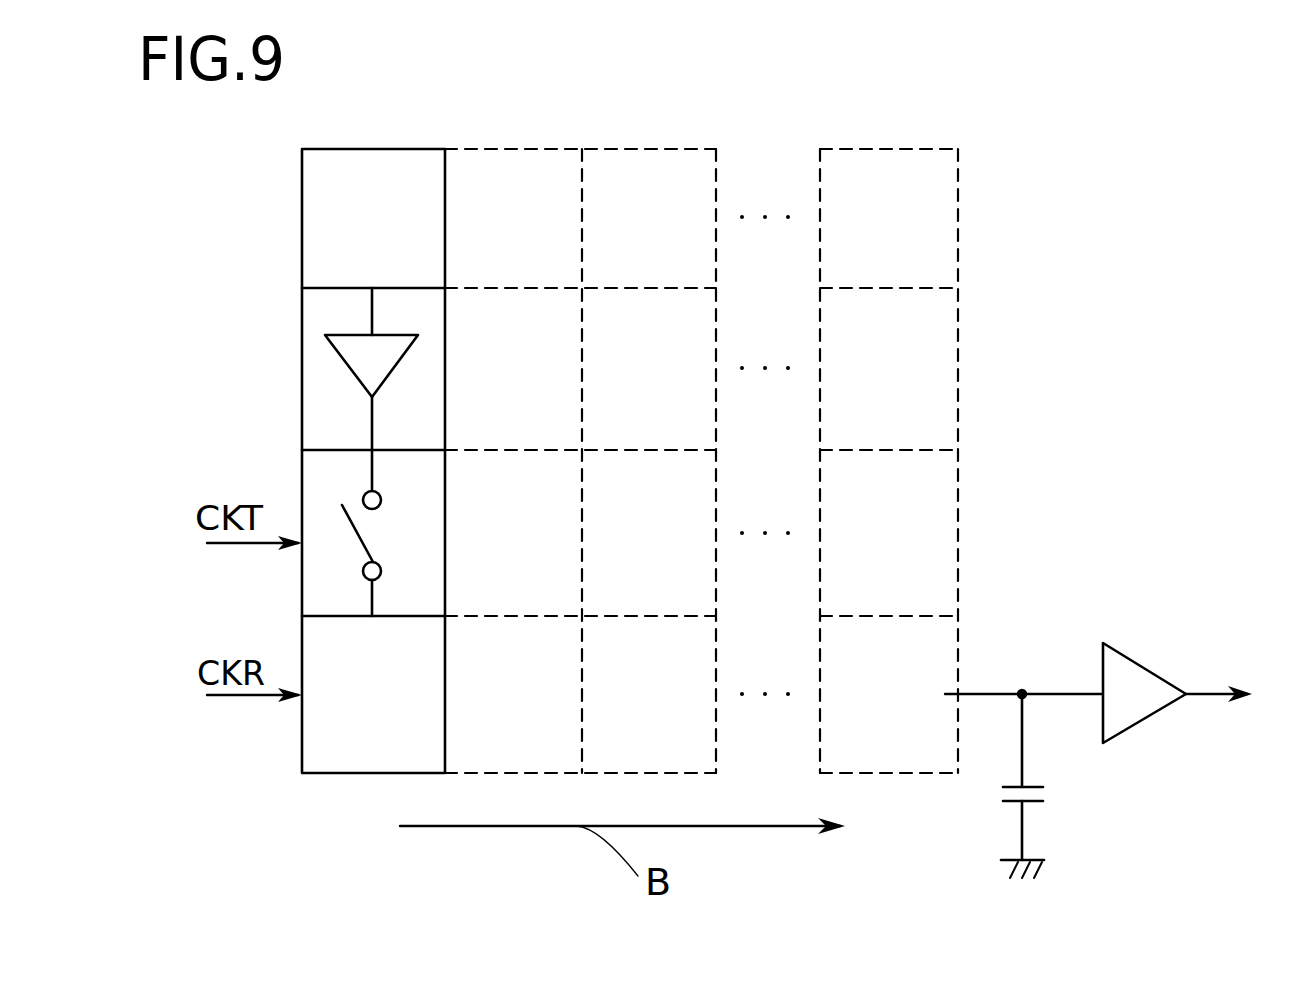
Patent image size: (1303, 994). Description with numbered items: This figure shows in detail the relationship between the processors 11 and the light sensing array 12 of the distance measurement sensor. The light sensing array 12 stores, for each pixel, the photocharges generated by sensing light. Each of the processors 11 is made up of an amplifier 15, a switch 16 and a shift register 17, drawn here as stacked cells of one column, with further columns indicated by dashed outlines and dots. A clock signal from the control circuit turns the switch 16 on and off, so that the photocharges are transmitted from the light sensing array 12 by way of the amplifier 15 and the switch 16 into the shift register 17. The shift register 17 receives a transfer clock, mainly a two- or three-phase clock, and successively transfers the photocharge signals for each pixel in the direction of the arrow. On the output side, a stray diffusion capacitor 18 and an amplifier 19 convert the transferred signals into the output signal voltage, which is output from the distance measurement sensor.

The processors 11 is at (968, 770).
The light sensing array 12 is at (302, 227).
The amplifier 15 is at (302, 367).
The switch 16 is at (302, 494).
The shift register 17 is at (302, 745).
The stray diffusion capacitor 18 is at (1030, 803).
The amplifier 19 is at (1133, 660).